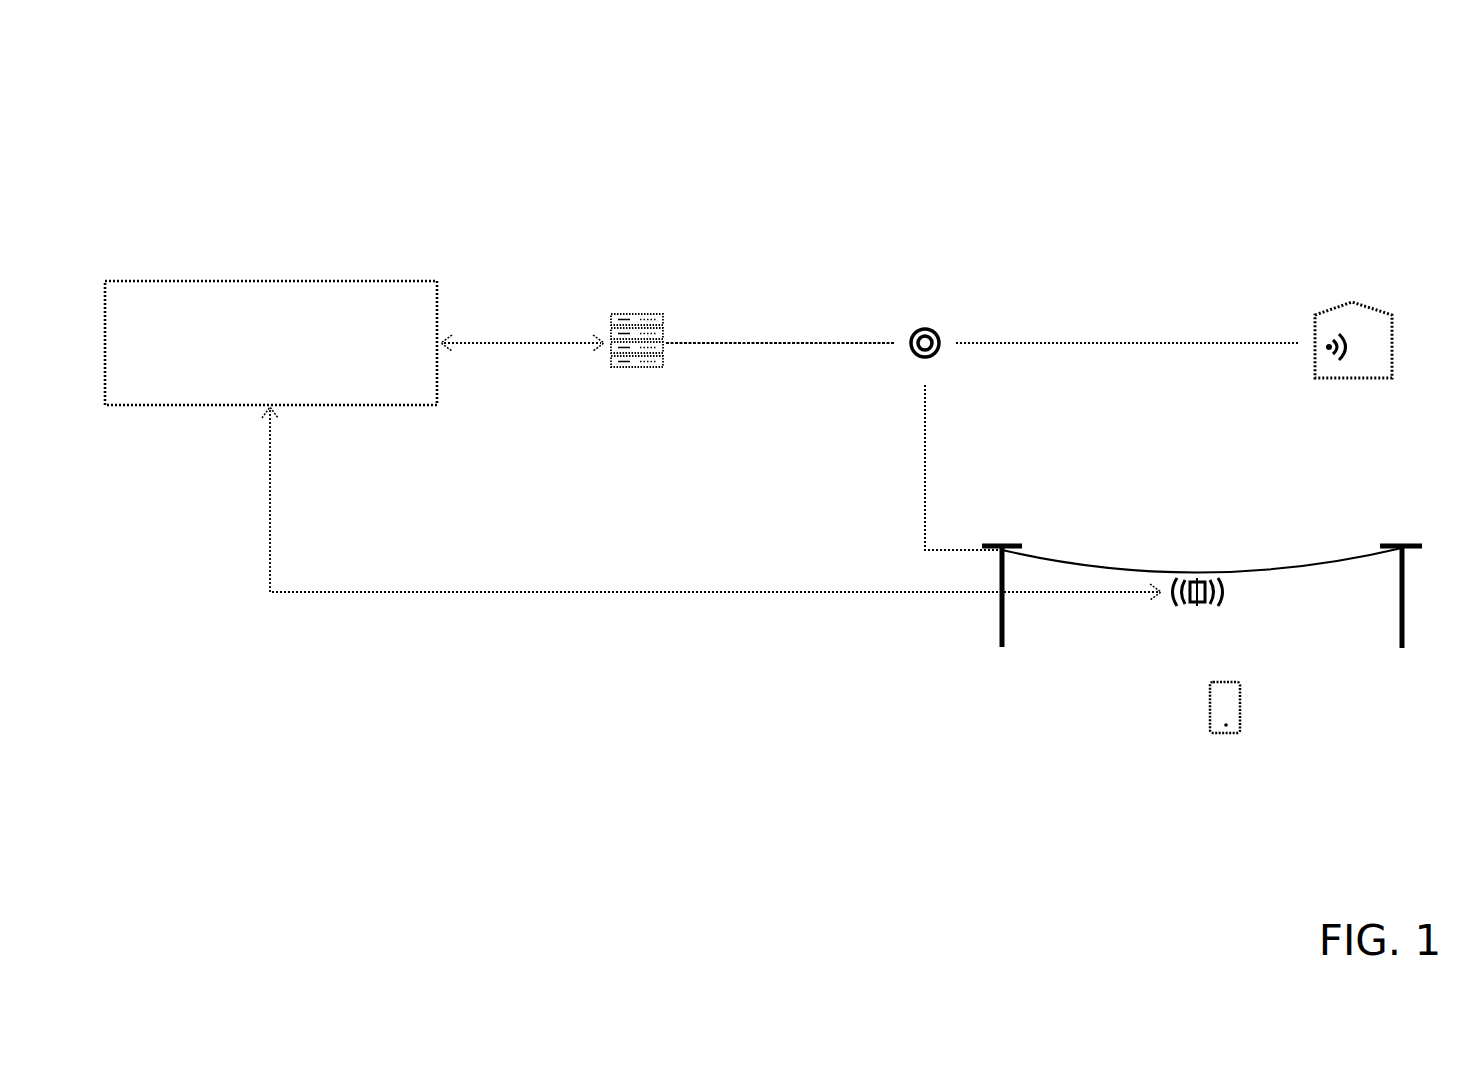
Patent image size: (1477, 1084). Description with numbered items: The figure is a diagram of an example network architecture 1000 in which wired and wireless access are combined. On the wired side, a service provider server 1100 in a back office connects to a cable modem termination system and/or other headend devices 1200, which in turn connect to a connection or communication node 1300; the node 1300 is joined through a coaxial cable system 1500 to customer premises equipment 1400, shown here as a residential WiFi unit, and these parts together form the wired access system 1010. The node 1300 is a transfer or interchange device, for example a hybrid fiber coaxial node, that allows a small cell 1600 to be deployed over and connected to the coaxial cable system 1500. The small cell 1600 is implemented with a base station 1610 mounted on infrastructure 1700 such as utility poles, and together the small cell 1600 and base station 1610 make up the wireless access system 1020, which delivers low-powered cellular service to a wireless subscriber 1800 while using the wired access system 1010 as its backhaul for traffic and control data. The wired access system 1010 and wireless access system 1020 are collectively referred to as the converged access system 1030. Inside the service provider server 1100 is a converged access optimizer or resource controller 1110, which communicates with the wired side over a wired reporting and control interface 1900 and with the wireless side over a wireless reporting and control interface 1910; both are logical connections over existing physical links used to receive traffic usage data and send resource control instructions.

The network architecture 1000 is at (1242, 132).
The wired access system 1010 is at (848, 155).
The wireless access system 1020 is at (818, 652).
The converged access system 1030 is at (611, 713).
The service provider server 1100 is at (266, 281).
The resource controller 1110 is at (271, 343).
The cable modem termination system 1200 is at (676, 328).
The connection or communication node 1300 is at (955, 318).
The customer premises equipment 1400 is at (1376, 304).
The coaxial cable system 1500 is at (1173, 321).
The small cell 1600 is at (1328, 671).
The base station 1610 is at (1165, 600).
The infrastructure 1700 is at (985, 625).
The wireless subscriber 1800 is at (1272, 745).
The wired reporting and control interface 1900 is at (551, 272).
The wireless reporting and control interface 1910 is at (711, 503).